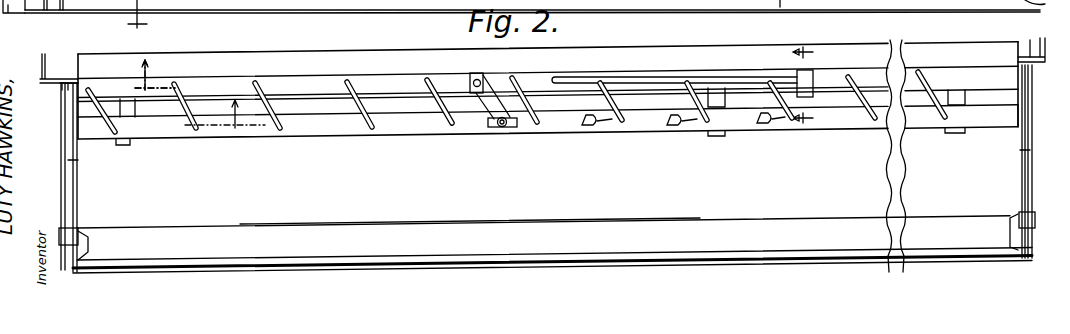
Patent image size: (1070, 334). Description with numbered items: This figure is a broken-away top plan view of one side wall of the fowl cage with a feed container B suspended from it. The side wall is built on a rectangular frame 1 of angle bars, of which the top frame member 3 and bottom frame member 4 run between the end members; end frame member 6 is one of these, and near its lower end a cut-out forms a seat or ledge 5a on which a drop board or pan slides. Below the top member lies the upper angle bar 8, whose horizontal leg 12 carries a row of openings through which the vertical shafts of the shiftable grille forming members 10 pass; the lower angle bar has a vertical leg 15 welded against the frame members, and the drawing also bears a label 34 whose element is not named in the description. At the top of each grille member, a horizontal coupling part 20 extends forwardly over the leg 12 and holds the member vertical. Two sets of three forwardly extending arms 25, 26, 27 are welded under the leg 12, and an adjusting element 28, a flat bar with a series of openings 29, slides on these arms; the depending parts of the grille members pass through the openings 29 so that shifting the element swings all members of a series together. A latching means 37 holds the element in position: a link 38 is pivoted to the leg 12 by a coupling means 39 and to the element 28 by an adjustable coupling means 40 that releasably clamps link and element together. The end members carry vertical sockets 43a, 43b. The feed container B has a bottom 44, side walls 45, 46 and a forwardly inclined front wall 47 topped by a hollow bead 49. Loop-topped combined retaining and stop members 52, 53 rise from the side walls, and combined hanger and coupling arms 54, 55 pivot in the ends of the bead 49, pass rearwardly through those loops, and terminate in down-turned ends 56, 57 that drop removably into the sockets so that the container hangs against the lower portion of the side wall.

The rectangular frame 1 is at (279, 46).
The top frame member 3 is at (636, 58).
The bottom frame member 4 is at (148, 40).
The seat or ledge 5a is at (1024, 1).
The end frame member 6 is at (1030, 40).
The upper angle bar 8 is at (315, 82).
The shiftable grille forming member 10 is at (936, 58).
The horizontal leg 12 is at (232, 62).
The vertical leg 15 is at (697, 88).
The horizontal coupling part 20 is at (272, 126).
The forwardly extending arm 25 is at (121, 146).
The forwardly extending arm 26 is at (712, 138).
The forwardly extending arm 27 is at (948, 135).
The adjusting element 28 is at (425, 128).
The openings 29 is at (353, 130).
The lower rail 34 is at (1000, 82).
The latching means 37 is at (496, 93).
The link 38 is at (490, 129).
The coupling means 39 is at (480, 76).
The adjustable coupling means 40 is at (506, 129).
The socket 43a is at (62, 84).
The socket 43b is at (1006, 106).
The bottom 44 is at (602, 210).
The side wall 45 is at (78, 192).
The side wall 46 is at (1022, 180).
The front wall 47 is at (672, 246).
The hollow bead 49 is at (446, 244).
The combined retaining and stop member 52 is at (80, 228).
The combined retaining and stop member 53 is at (1020, 221).
The combined hanger and coupling arm 54 is at (60, 158).
The combined hanger and coupling arm 55 is at (1030, 152).
The down-turned end 56 is at (86, 87).
The down-turned end 57 is at (1036, 62).
The feed container B is at (356, 254).